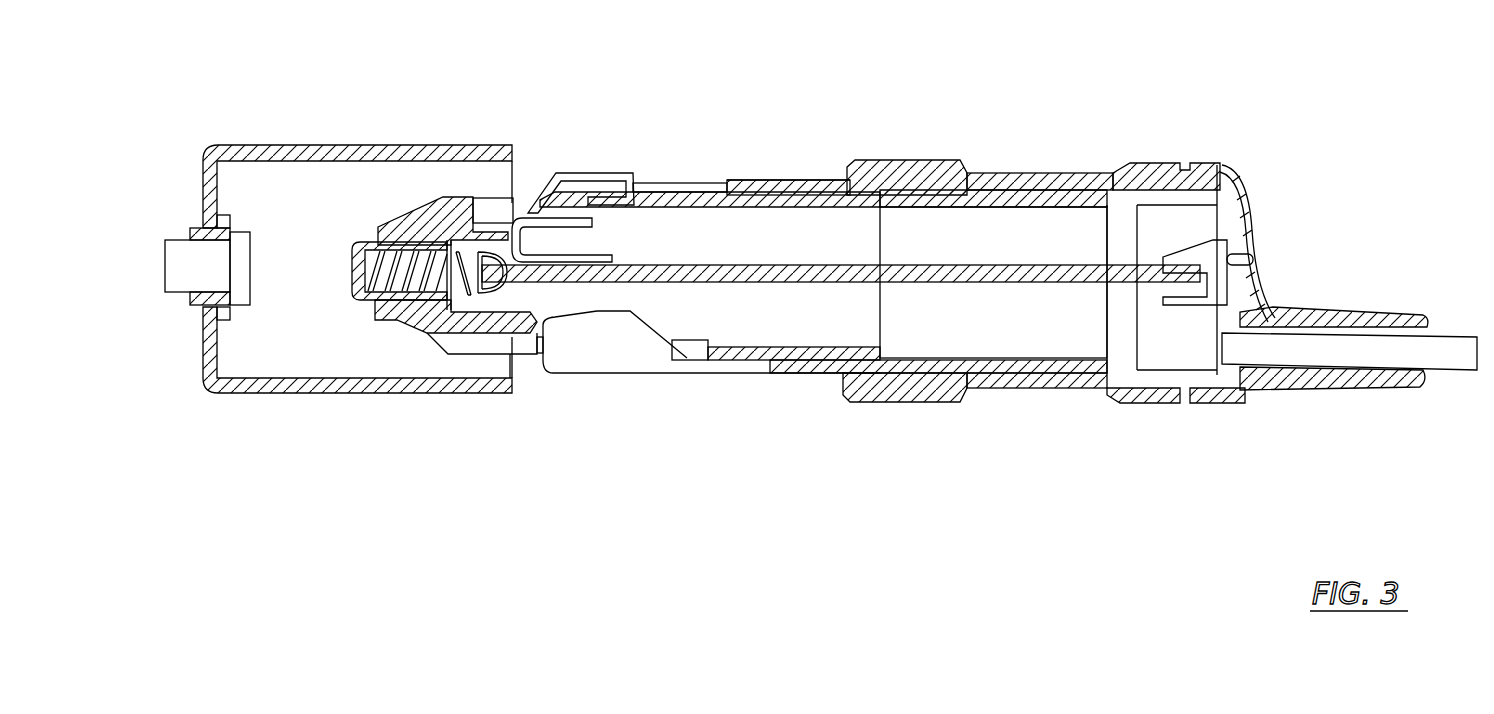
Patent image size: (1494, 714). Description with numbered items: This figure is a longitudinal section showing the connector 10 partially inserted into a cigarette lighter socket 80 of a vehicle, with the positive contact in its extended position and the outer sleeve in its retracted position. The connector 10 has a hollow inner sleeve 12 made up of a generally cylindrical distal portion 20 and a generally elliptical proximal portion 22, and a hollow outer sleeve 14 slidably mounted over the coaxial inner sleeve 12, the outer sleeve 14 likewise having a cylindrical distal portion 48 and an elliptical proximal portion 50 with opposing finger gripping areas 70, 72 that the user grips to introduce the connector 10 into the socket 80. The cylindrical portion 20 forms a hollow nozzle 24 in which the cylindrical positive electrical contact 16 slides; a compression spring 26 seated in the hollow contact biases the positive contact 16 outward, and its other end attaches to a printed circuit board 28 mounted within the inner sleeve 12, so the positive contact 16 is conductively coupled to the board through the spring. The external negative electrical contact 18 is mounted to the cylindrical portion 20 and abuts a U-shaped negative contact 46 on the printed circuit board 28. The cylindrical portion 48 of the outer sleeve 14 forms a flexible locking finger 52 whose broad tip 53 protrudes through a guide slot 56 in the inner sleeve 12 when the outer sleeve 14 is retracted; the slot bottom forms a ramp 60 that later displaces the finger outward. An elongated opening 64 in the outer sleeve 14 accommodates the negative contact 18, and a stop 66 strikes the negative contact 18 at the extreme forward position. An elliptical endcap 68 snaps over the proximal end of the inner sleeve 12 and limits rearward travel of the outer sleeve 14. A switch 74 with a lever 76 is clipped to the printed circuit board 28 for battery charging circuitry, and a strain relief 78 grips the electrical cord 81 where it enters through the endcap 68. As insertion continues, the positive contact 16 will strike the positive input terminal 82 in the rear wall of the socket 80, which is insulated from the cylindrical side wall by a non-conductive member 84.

The connector 10 is at (1368, 134).
The inner sleeve 12 is at (807, 363).
The outer sleeve 14 is at (900, 403).
The positive electrical contact 16 is at (350, 266).
The external negative electrical contact 18 is at (598, 172).
The cylindrical distal portion 20 is at (820, 192).
The elliptical proximal portion 22 is at (965, 190).
The nozzle 24 is at (393, 240).
The compression spring 26 is at (397, 278).
The printed circuit board 28 is at (763, 283).
The U-shaped negative contact 46 is at (595, 258).
The cylindrical distal portion of outer sleeve 48 is at (760, 190).
The elliptical proximal portion of outer sleeve 50 is at (893, 160).
The locking finger 52 is at (675, 367).
The broad tip 53 is at (600, 357).
The guide slot 56 is at (460, 342).
The ramp 60 is at (538, 343).
The elongated opening 64 is at (683, 190).
The stop 66 is at (720, 185).
The endcap 68 is at (1233, 170).
The finger gripping area 70 is at (1066, 172).
The finger gripping area 72 is at (1073, 393).
The switch 74 is at (1217, 250).
The lever 76 is at (1250, 260).
The strain relief 78 is at (1357, 388).
The cigarette lighter socket 80 is at (323, 146).
The electrical cord 81 is at (1447, 372).
The positive input terminal 82 is at (182, 278).
The non-conductive member 84 is at (195, 227).